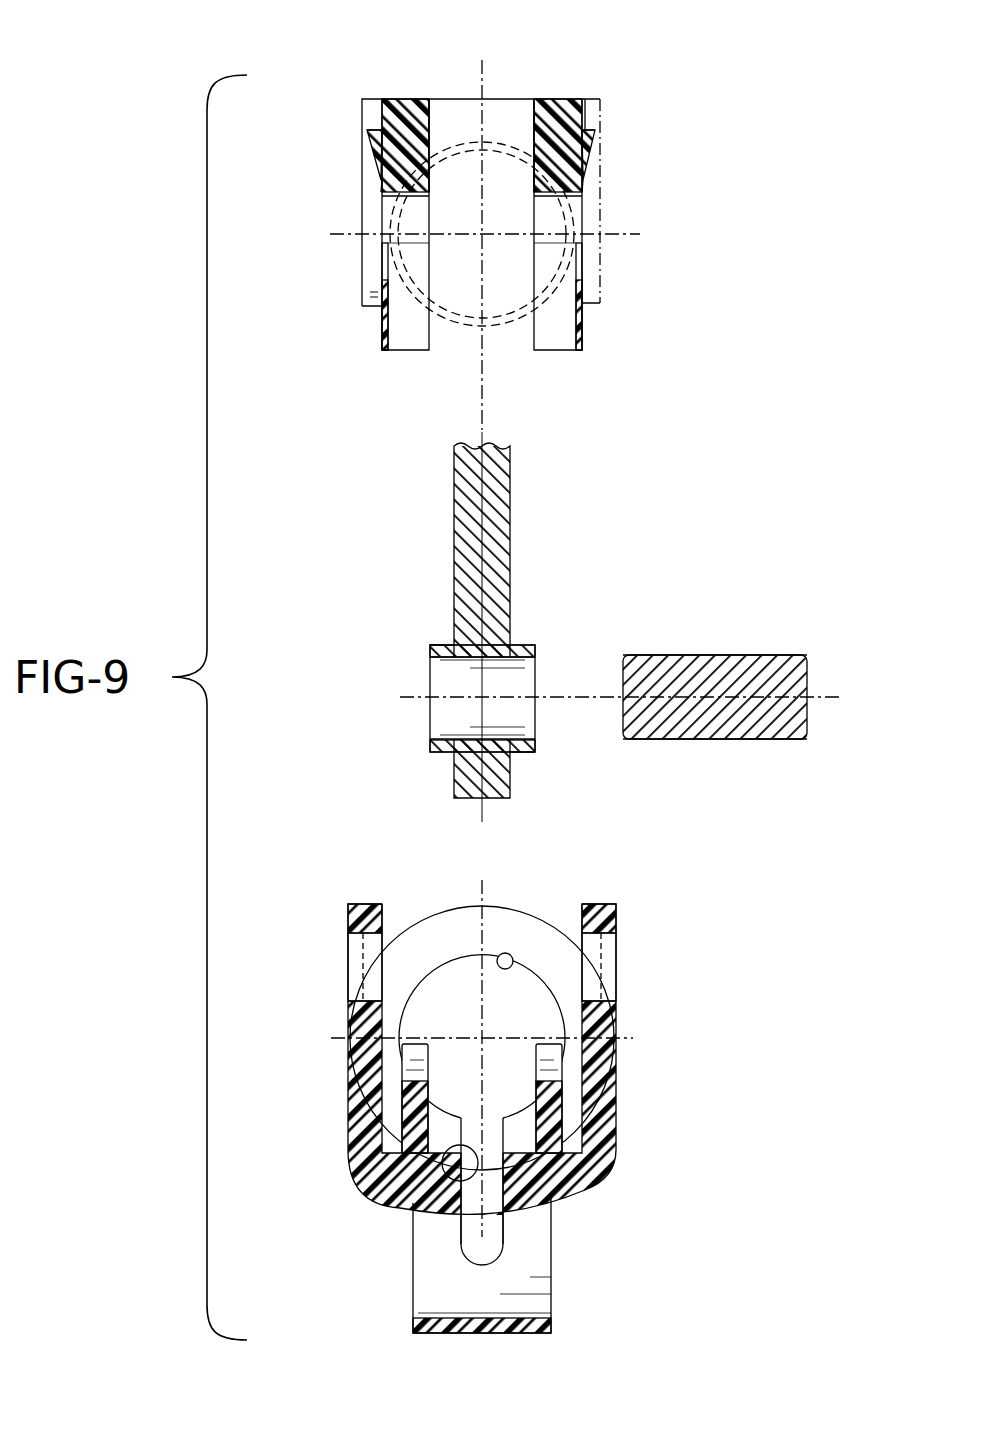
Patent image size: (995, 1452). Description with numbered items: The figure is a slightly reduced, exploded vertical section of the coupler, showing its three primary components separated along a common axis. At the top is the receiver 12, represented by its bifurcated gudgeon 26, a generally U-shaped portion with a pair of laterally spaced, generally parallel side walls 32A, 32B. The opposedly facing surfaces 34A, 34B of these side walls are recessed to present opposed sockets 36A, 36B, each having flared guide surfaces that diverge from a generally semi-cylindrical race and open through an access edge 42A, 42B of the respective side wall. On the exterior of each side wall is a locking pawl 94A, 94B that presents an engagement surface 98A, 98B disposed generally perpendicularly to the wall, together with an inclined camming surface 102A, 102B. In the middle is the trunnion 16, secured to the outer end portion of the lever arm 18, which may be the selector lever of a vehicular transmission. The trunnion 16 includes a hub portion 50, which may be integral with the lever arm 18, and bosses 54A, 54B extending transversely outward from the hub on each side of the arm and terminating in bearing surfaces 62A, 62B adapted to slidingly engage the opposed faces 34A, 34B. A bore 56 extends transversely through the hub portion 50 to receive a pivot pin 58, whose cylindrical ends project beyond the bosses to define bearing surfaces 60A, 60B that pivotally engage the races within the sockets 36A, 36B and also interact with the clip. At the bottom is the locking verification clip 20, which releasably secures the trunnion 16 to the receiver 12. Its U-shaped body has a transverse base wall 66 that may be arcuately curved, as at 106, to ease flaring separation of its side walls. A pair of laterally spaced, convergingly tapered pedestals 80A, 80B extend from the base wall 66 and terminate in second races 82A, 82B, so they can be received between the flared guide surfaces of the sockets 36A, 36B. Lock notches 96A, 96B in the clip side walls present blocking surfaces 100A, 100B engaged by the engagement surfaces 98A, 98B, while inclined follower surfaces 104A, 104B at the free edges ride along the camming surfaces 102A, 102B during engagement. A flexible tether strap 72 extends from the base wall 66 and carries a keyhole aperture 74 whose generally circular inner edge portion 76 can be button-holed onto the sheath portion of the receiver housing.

The receiver 12 is at (598, 253).
The bifurcated gudgeon 26 is at (558, 97).
The side wall 32A is at (397, 99).
The side wall 32B is at (568, 99).
The opposedly facing surface 34A is at (430, 128).
The opposedly facing surface 34B is at (533, 128).
The locking pawl 94A is at (366, 155).
The locking pawl 94B is at (598, 155).
The engagement surface 98A is at (372, 131).
The engagement surface 98B is at (592, 131).
The inclined camming surface 102A is at (378, 176).
The inclined camming surface 102B is at (586, 176).
The access edge 42A is at (393, 351).
The access edge 42B is at (571, 351).
The socket 36A is at (406, 312).
The socket 36B is at (559, 312).
The lever arm 18 is at (490, 498).
The hub portion 50 is at (530, 644).
The boss 54A is at (441, 644).
The boss 54B is at (523, 753).
The bearing surface 62A is at (430, 650).
The bearing surface 62B is at (537, 741).
The bore 56 is at (468, 738).
The trunnion 16 is at (591, 624).
The pivot pin 58 is at (701, 686).
The cylindrical bearing surface 60A is at (643, 741).
The cylindrical bearing surface 60B is at (787, 654).
The locking verification clip 20 is at (619, 1119).
The keyhole aperture 74 is at (456, 966).
The inner edge portion 76 is at (506, 954).
The inclined follower surface 104A is at (380, 904).
The inclined follower surface 104B is at (584, 904).
The blocking surface 100A is at (361, 940).
The blocking surface 100B is at (604, 940).
The lock notch 96A is at (348, 970).
The lock notch 96B is at (617, 970).
The pedestal 80A is at (404, 1119).
The pedestal 80B is at (560, 1119).
The second race 82A is at (424, 1056).
The second race 82B is at (540, 1056).
The arcuate curve 106 is at (412, 1193).
The transverse base wall 66 is at (541, 1203).
The tether strap 72 is at (446, 1317).